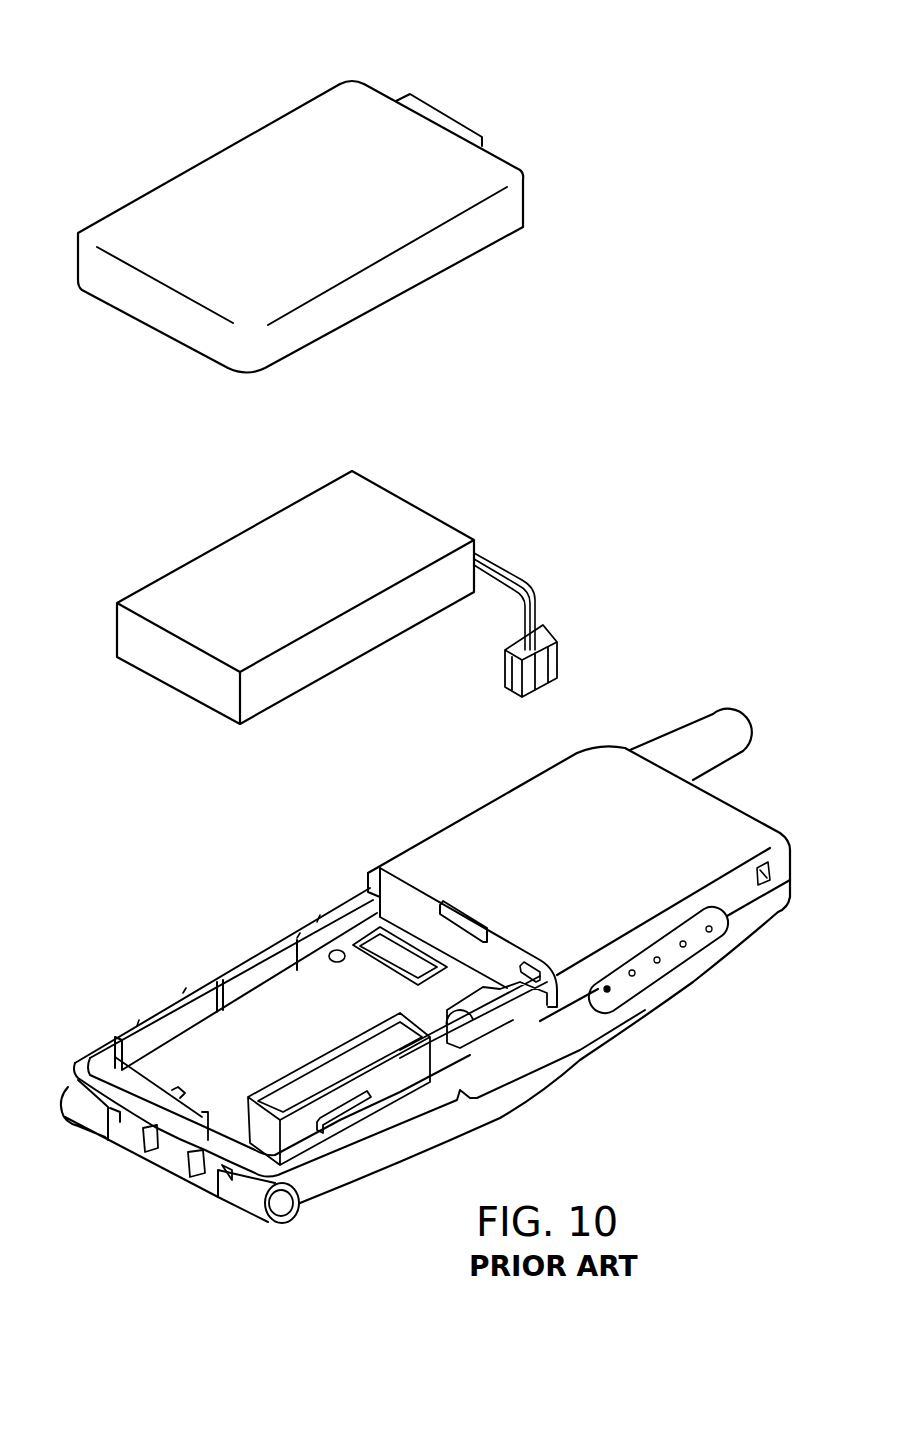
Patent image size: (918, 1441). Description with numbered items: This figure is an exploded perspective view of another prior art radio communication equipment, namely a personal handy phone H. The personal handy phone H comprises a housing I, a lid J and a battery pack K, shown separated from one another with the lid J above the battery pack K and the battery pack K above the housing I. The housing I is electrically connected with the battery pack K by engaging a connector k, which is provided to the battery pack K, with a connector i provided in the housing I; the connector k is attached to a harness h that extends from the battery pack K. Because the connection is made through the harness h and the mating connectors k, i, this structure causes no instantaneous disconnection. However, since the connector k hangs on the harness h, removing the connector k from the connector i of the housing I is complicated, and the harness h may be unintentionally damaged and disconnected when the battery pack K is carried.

The lid J is at (267, 180).
The personal handy phone H is at (524, 453).
The battery pack K is at (181, 659).
The harness h is at (523, 571).
The connector k is at (557, 655).
The housing I is at (680, 980).
The connector i is at (480, 1023).